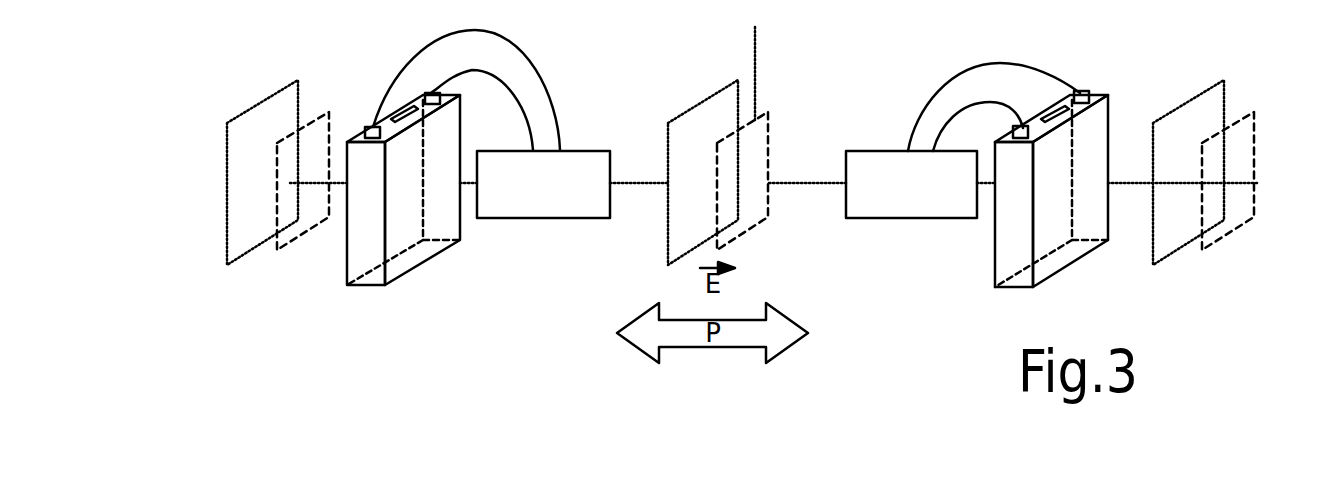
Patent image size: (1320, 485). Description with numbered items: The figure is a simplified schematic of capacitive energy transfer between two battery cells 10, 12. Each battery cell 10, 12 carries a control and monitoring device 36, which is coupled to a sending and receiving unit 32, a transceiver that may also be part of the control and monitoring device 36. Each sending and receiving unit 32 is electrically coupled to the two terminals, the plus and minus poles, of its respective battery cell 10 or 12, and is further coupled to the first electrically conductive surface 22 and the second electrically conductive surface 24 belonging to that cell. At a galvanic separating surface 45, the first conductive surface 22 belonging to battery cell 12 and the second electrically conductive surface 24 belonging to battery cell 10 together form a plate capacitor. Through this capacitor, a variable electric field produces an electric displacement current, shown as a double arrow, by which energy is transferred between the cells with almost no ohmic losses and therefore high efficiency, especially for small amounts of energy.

The battery cell 10 is at (368, 258).
The battery cell 12 is at (1005, 250).
The first electrically conductive surface 22 is at (305, 236).
The second electrically conductive surface 24 is at (228, 232).
The sending and receiving unit 32 is at (540, 207).
The control and monitoring device 36 is at (407, 107).
The galvanic separating surface 45 is at (757, 52).